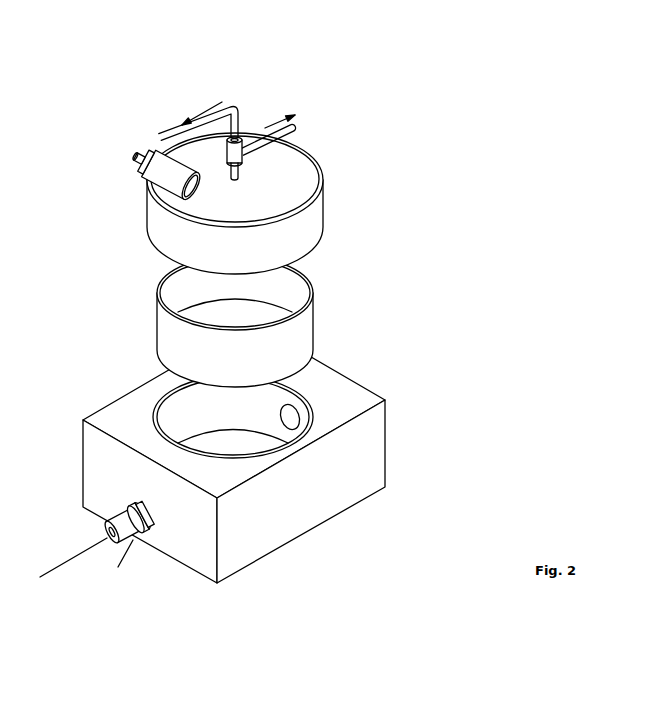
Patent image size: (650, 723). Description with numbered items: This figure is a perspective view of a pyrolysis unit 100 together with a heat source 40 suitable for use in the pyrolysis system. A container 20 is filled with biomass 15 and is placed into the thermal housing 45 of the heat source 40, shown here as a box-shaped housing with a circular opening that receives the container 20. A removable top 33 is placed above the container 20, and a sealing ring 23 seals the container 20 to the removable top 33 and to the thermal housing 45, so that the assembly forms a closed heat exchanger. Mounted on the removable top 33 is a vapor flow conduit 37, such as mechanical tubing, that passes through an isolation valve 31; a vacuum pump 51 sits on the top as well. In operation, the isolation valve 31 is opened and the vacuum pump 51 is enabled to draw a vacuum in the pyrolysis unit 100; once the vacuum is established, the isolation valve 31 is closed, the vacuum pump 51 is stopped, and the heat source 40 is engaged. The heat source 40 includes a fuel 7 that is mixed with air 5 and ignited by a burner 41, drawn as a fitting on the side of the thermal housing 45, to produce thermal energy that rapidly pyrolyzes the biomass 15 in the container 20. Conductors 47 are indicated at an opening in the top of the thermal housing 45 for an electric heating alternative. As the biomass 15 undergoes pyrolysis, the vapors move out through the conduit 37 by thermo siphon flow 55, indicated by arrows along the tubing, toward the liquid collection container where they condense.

The pyrolysis unit 100 is at (378, 265).
The air 5 is at (83, 545).
The fuel 7 is at (127, 557).
The biomass 15 is at (210, 578).
The container 20 is at (167, 335).
The sealing ring 23 is at (315, 297).
The isolation valve 31 is at (244, 162).
The removable top 33 is at (313, 207).
The vapor flow conduit 37 is at (295, 132).
The heat source 40 is at (98, 560).
The burner 41 is at (115, 517).
The thermal housing 45 is at (342, 497).
The conductors 47 is at (290, 418).
The vacuum pump 51 is at (143, 152).
The thermo siphon flow 55 is at (275, 118).